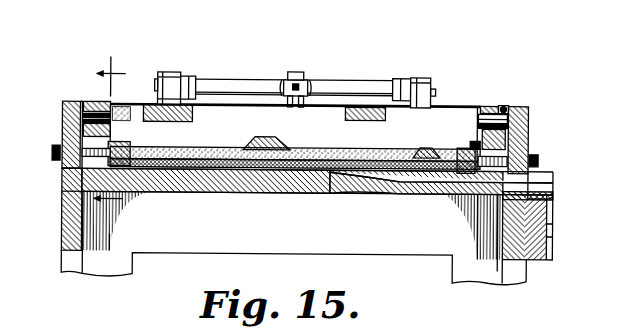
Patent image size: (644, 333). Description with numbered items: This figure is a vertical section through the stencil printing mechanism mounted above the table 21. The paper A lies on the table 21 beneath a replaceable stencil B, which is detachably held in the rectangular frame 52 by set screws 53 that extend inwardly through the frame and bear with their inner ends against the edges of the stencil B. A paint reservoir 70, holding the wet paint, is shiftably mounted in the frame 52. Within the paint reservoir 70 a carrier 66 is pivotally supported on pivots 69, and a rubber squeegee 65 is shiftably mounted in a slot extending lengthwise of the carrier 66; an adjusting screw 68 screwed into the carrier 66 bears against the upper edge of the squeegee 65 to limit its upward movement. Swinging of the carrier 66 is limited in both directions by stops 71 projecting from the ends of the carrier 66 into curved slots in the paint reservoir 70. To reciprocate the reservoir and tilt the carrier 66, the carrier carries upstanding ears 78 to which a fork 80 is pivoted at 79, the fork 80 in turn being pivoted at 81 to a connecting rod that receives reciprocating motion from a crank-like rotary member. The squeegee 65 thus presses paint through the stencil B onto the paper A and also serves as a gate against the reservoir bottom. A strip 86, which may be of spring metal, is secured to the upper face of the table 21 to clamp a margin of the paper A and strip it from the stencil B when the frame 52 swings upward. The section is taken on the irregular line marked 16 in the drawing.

The frame 52 is at (72, 101).
The section line 16- 16 is at (116, 138).
The pivot 81 is at (290, 74).
The adjusting screw 68 is at (303, 85).
The fork 80 is at (355, 87).
The upstanding ears 78 is at (422, 77).
The pivot 79 is at (433, 90).
The paint reservoir 70 is at (486, 105).
The pivots 69 is at (503, 105).
The stencil B is at (107, 146).
The set screws 53 is at (52, 150).
The squeegee 65 is at (213, 150).
The carrier 66 is at (295, 135).
The strip 86 is at (448, 170).
The table 21 is at (276, 197).
The paper A is at (307, 166).
The stops 71 is at (465, 172).